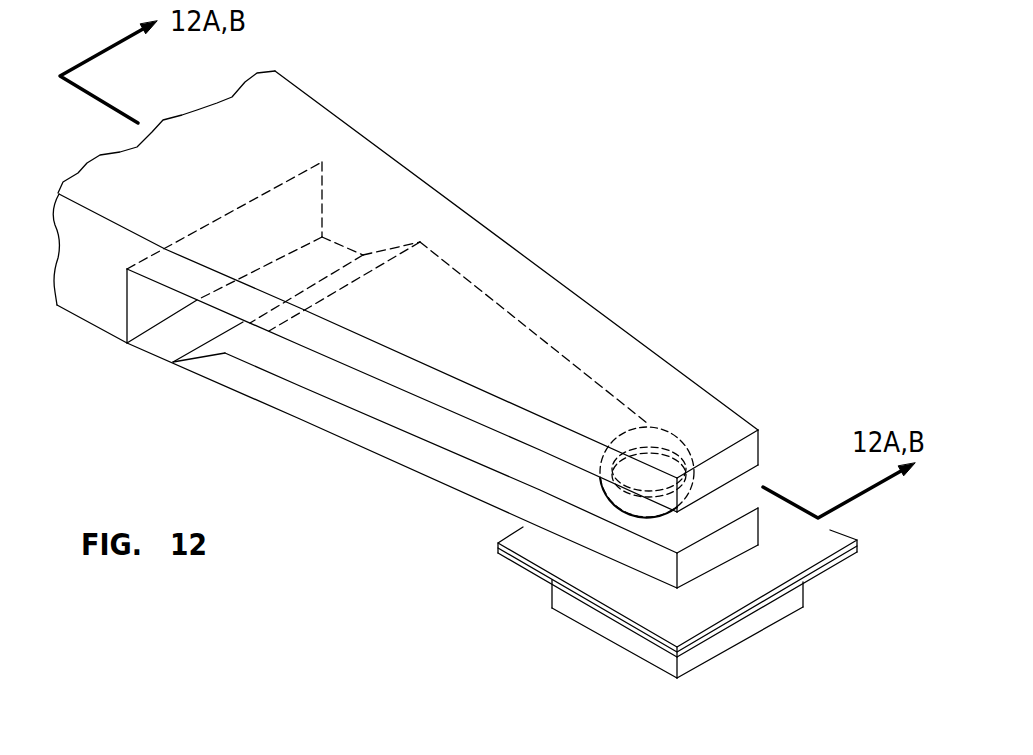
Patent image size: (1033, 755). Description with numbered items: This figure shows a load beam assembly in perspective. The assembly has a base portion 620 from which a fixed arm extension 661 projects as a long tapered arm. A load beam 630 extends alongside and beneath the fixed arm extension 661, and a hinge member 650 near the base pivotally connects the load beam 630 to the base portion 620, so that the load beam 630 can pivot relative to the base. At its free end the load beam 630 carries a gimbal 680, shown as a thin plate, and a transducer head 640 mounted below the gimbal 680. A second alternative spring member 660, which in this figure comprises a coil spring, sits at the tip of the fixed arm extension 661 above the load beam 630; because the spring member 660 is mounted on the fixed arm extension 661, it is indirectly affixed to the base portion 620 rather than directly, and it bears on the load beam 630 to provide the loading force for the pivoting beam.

The base portion 620 is at (85, 308).
The load beam 630 is at (386, 455).
The transducer head 640 is at (707, 661).
The hinge member 650 is at (160, 346).
The second alternative spring member 660 is at (657, 425).
The fixed arm extension 661 is at (513, 250).
The gimbal 680 is at (817, 575).